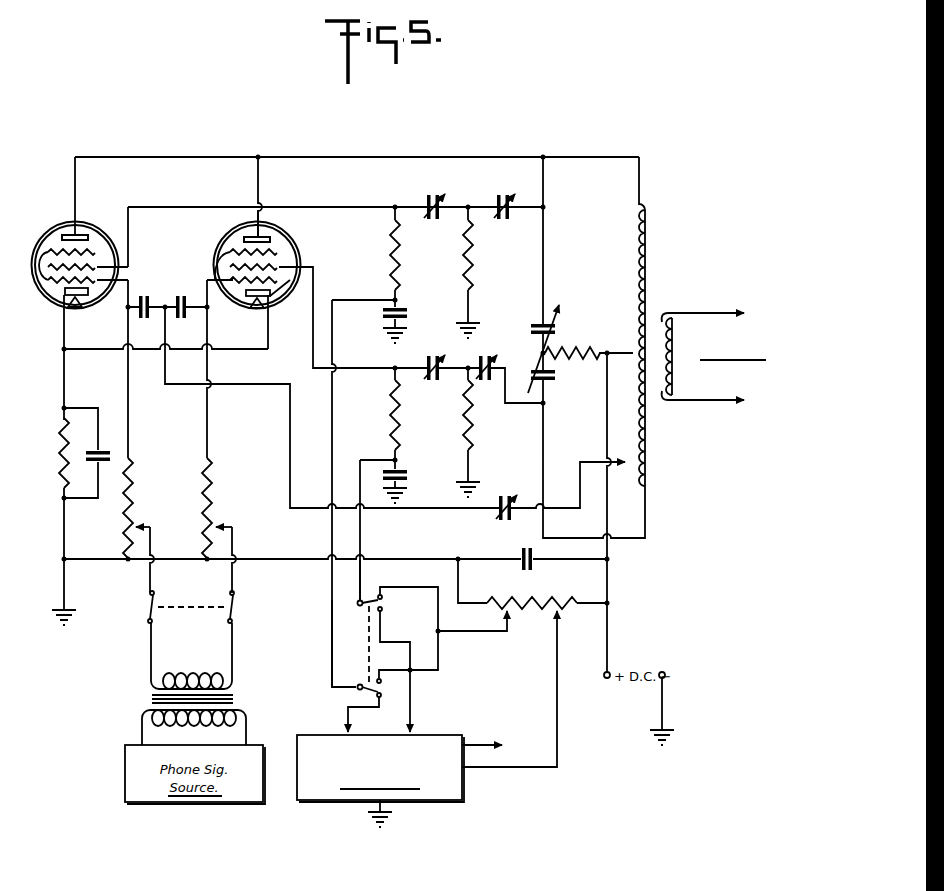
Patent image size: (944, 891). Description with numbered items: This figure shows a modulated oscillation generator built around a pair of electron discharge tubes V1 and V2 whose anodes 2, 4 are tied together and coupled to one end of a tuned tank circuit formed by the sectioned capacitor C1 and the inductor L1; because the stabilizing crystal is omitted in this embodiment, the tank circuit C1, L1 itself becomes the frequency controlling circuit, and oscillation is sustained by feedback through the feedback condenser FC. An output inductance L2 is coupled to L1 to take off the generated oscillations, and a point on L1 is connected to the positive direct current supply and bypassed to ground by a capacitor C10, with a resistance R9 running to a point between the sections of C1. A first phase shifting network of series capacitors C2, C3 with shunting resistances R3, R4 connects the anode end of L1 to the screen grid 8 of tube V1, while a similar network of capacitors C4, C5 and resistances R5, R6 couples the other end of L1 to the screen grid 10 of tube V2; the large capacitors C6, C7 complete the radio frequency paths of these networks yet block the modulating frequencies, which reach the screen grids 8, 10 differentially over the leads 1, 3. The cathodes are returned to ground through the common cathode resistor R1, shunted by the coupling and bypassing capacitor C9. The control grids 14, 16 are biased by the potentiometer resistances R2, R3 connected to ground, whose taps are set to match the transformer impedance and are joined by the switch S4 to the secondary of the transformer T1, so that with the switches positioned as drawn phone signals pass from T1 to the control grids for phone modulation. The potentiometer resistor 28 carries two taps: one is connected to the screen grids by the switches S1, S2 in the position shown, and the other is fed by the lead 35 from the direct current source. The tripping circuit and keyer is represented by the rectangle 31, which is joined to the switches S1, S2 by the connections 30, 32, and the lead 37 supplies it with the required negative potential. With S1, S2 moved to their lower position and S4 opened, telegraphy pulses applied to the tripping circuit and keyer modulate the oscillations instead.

The electron discharge tube V1 is at (74, 243).
The anode 2 is at (78, 235).
The screen grid 8 is at (97, 267).
The control grid 14 is at (60, 287).
The electron discharge tube V2 is at (267, 270).
The anode 4 is at (270, 239).
The screen grid 10 is at (279, 266).
The control grid 16 is at (281, 300).
The coupling and radio frequency bypassing capacitor C9 is at (146, 296).
The capacitor C10 is at (184, 296).
The common cathode resistor R1 is at (56, 452).
The biasing resistor R2 is at (133, 490).
The biasing resistor R3 is at (214, 490).
The shunting resistance R4 is at (480, 255).
The resistance R5 is at (388, 410).
The resistance R6 is at (464, 412).
The resistor R9 is at (580, 352).
The capacitor C1 is at (560, 317).
The series capacitor C2 is at (518, 240).
The series capacitor C3 is at (444, 240).
The capacitor C4 is at (490, 351).
The capacitor C5 is at (441, 341).
The capacitor C6 is at (383, 314).
The capacitor C7 is at (407, 478).
The feedback condenser FC is at (494, 513).
The inductor L1 is at (650, 250).
The inductance L2 is at (669, 320).
The switch S1 is at (385, 690).
The switch S2 is at (385, 605).
The switch S4 is at (191, 618).
The transformer T1 is at (148, 698).
The lead 1 is at (332, 610).
The lead 3 is at (360, 575).
The potentiometer resistor 28 is at (540, 616).
The lead from switch S2 to tripping circuit 30 is at (413, 718).
The tripping circuit and keyer 31 is at (450, 808).
The lead from switch S1 to tripping circuit 32 is at (348, 712).
The lead 35 is at (560, 731).
The lead 37 is at (488, 736).